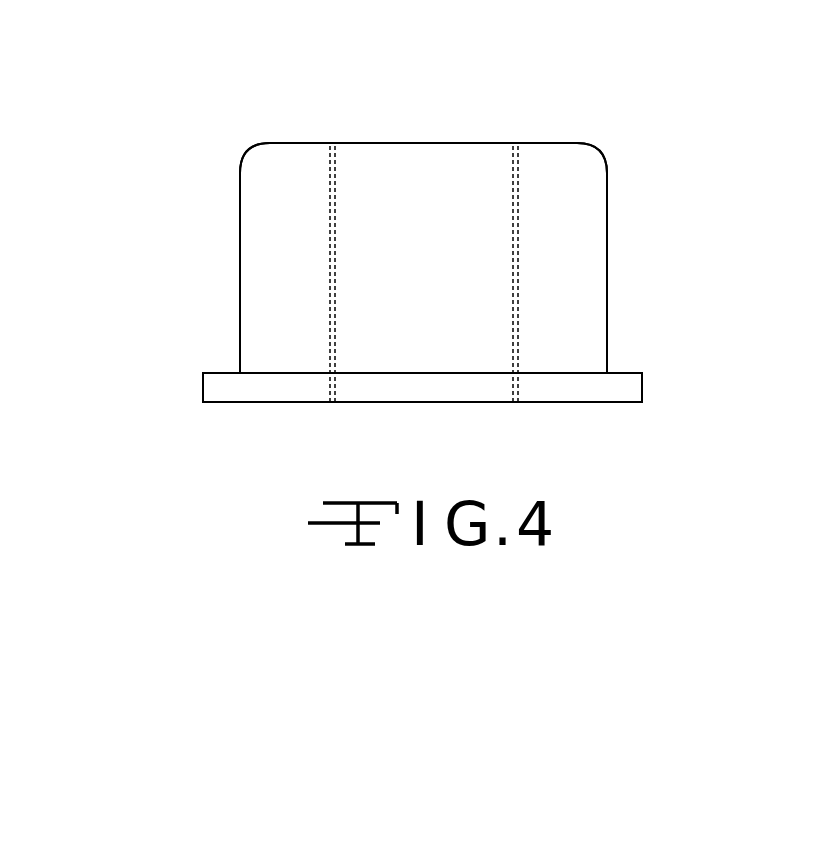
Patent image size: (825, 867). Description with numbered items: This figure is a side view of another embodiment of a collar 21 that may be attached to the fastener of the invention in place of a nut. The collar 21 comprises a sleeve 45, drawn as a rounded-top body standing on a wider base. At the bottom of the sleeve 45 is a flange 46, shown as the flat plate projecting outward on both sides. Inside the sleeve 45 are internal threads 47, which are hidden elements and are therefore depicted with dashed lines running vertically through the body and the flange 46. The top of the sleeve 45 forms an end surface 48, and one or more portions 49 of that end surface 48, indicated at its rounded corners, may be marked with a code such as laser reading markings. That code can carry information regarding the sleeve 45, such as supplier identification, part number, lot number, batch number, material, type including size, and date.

The collar 21 is at (435, 221).
The sleeve 45 is at (607, 273).
The flange 46 is at (630, 373).
The internal threads 47 is at (345, 244).
The end surface 48 is at (480, 143).
The portions of the end surface 49 is at (298, 143).